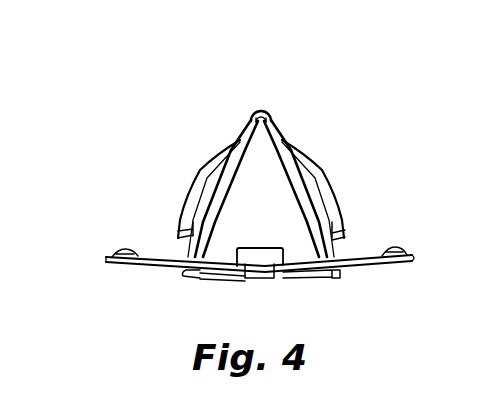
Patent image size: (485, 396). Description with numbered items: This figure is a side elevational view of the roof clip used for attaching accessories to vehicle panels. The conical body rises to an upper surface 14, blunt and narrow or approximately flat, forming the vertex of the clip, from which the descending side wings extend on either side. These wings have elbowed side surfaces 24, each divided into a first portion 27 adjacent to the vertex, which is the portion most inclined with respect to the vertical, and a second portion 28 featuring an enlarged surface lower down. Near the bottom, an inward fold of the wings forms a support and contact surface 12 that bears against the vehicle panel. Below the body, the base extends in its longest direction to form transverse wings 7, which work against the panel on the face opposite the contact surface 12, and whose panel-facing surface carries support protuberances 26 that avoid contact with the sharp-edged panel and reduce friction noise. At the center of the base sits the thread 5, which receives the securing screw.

The upper surface 14 is at (257, 107).
The elbowed side surfaces 24 is at (203, 194).
The first portion 27 is at (315, 172).
The contact surface 12 is at (178, 233).
The second portion 28 is at (332, 208).
The transverse wings 7 is at (163, 265).
The support protuberances 26 is at (393, 246).
The thread 5 is at (257, 243).